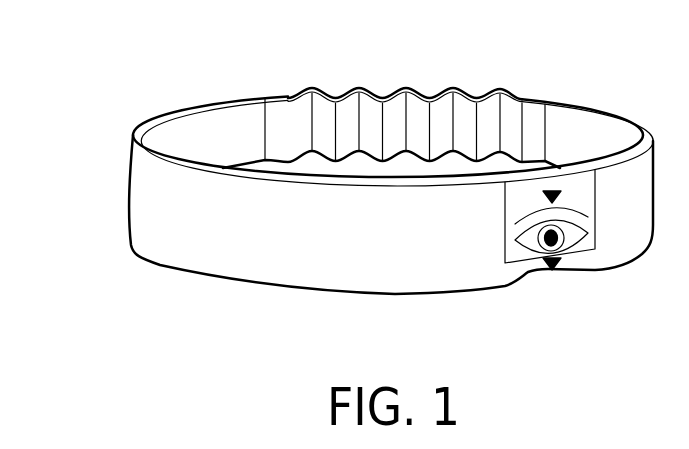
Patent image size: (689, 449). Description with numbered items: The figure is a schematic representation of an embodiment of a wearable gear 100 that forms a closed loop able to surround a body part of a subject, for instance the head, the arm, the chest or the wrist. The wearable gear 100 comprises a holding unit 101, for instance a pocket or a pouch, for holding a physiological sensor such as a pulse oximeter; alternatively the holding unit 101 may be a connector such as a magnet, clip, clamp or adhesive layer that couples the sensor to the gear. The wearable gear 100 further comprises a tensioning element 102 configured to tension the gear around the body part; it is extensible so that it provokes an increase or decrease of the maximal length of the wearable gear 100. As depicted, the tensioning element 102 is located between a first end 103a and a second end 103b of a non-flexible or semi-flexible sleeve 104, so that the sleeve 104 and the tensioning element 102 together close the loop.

The wearable gear 100 is at (113, 92).
The holding unit 101 is at (553, 275).
The tensioning element 102 is at (416, 66).
The first end 103a is at (544, 98).
The second end 103b is at (265, 98).
The sleeve 104 is at (199, 251).